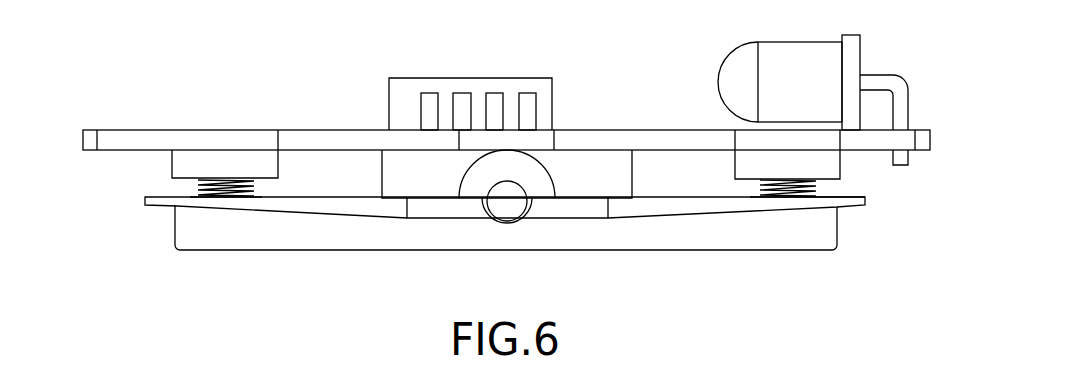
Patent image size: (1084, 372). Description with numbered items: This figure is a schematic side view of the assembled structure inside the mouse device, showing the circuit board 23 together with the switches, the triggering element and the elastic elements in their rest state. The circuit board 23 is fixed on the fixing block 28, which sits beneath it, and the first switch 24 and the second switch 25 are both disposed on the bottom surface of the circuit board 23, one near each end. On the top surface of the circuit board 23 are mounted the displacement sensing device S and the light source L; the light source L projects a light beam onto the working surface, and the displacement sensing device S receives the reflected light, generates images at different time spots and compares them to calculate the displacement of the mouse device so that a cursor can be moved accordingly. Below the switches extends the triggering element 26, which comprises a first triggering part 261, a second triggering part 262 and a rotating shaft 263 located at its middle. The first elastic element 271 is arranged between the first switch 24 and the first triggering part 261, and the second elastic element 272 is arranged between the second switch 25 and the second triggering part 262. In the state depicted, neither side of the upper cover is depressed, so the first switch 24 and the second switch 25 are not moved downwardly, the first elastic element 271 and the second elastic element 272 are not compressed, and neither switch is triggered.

The circuit board 23 is at (345, 140).
The first switch 24 is at (217, 162).
The second switch 25 is at (832, 162).
The triggering element 26 is at (420, 237).
The fixing block 28 is at (565, 163).
The first triggering part 261 is at (255, 198).
The second triggering part 262 is at (837, 207).
The rotating shaft 263 is at (513, 206).
The first elastic element 271 is at (188, 183).
The second elastic element 272 is at (758, 184).
The displacement sensing device S is at (440, 83).
The light source L is at (800, 48).